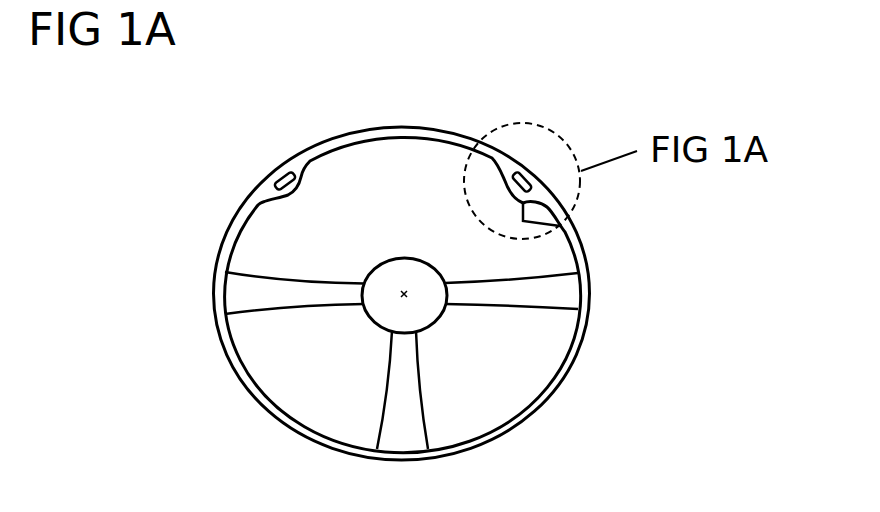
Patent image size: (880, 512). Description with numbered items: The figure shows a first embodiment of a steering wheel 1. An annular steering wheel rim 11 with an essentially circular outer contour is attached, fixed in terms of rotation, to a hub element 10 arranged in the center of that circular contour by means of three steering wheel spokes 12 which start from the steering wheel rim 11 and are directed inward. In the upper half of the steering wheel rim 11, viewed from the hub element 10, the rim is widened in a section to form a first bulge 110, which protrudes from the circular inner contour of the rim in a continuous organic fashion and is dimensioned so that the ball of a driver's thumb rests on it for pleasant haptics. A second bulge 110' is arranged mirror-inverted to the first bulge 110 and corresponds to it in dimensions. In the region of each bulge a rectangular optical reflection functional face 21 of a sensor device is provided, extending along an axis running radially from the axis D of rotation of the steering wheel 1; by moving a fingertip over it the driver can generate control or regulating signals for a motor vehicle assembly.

The steering wheel 1 is at (186, 229).
The hub element 10 is at (388, 304).
The steering wheel rim 11 is at (398, 126).
The steering wheel spokes 12 is at (250, 295).
The optical reflection functional face 21 is at (282, 176).
The first bulge 110 is at (593, 206).
The second bulge 110' is at (309, 207).
The axis of rotation D is at (406, 296).